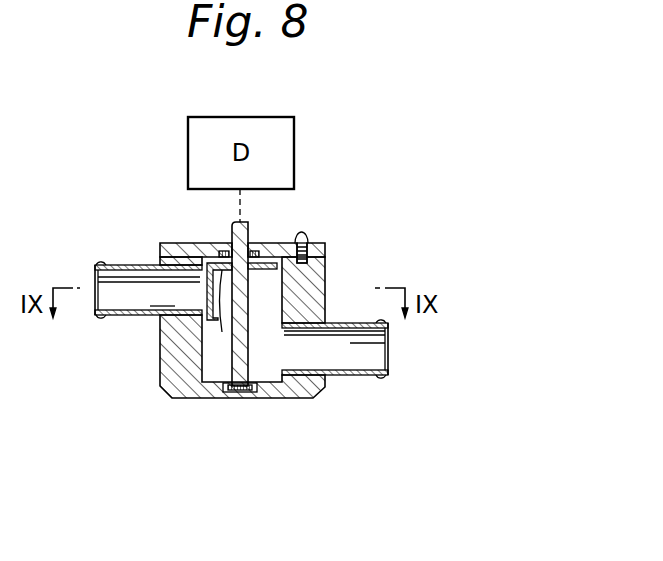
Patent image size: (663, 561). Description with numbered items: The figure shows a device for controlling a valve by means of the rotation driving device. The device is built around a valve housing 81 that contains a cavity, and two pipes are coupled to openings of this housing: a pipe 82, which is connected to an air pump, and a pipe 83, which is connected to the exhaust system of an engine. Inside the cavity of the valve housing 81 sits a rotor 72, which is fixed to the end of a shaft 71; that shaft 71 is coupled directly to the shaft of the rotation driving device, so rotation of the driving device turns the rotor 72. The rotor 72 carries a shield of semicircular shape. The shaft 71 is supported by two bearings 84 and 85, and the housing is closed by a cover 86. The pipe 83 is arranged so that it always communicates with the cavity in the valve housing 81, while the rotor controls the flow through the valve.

The shaft 71 is at (250, 223).
The rotor 72 is at (222, 332).
The valve housing 81 is at (299, 393).
The pipe 82 is at (134, 317).
The pipe 83 is at (358, 377).
The bearing 84 is at (217, 392).
The bearing 85 is at (272, 240).
The cover 86 is at (188, 242).